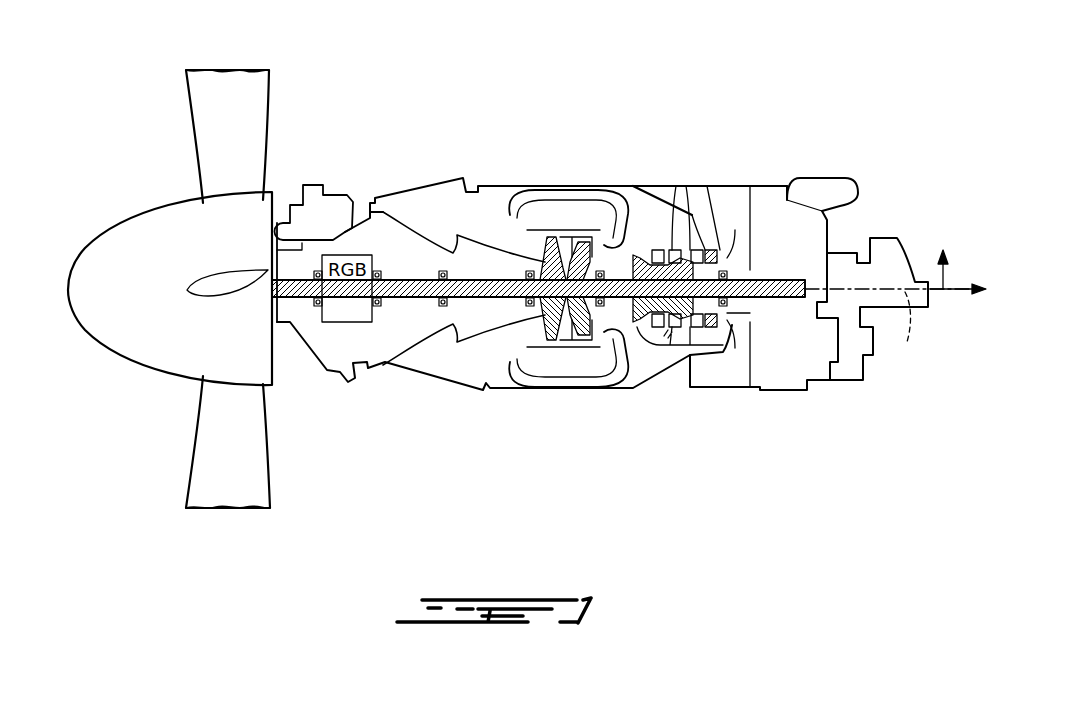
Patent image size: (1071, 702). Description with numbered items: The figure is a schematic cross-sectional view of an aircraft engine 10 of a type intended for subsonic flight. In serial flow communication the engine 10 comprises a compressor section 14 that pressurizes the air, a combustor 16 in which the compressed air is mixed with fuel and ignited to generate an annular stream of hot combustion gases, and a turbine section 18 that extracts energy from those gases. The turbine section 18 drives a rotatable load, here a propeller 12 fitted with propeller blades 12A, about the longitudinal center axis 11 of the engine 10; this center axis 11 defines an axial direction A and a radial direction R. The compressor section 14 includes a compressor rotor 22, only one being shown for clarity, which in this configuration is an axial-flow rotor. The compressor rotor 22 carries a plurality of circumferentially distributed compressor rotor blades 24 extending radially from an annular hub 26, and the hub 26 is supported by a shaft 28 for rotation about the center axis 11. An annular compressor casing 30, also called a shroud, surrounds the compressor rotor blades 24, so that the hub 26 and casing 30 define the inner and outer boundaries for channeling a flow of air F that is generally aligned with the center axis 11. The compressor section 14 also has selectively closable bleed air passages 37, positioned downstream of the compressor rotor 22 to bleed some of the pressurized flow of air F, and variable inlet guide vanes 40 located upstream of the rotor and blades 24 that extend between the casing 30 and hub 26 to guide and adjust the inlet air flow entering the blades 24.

The aircraft engine 10 is at (604, 111).
The longitudinal center axis 11 is at (895, 309).
The propeller 12 is at (204, 289).
The propeller blades 12A is at (252, 93).
The compressor section 14 is at (690, 346).
The combustor 16 is at (555, 205).
The turbine section 18 is at (567, 362).
The compressor rotor 22 is at (748, 313).
The compressor rotor blades 24 is at (672, 236).
The annular hub 26 is at (737, 278).
The shaft 28 is at (541, 288).
The annular compressor casing 30 is at (714, 228).
The bleed air passages 37 is at (664, 238).
The inlet guide vanes 40 is at (736, 257).
The flow of air F is at (735, 250).
The radial direction R is at (953, 267).
The axial direction A is at (958, 304).